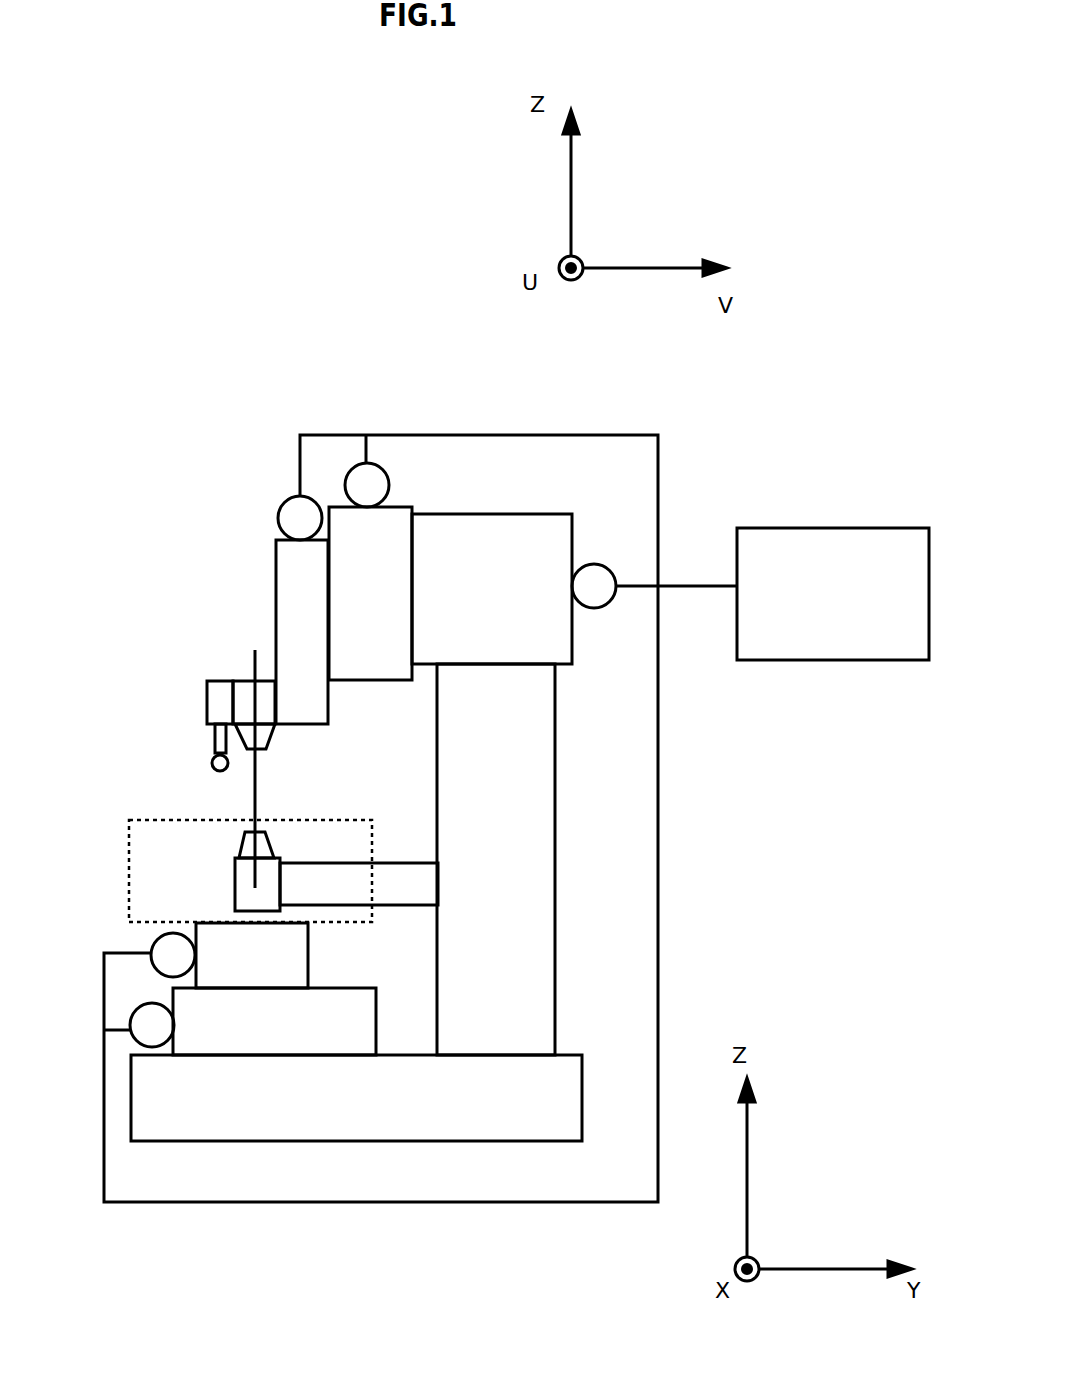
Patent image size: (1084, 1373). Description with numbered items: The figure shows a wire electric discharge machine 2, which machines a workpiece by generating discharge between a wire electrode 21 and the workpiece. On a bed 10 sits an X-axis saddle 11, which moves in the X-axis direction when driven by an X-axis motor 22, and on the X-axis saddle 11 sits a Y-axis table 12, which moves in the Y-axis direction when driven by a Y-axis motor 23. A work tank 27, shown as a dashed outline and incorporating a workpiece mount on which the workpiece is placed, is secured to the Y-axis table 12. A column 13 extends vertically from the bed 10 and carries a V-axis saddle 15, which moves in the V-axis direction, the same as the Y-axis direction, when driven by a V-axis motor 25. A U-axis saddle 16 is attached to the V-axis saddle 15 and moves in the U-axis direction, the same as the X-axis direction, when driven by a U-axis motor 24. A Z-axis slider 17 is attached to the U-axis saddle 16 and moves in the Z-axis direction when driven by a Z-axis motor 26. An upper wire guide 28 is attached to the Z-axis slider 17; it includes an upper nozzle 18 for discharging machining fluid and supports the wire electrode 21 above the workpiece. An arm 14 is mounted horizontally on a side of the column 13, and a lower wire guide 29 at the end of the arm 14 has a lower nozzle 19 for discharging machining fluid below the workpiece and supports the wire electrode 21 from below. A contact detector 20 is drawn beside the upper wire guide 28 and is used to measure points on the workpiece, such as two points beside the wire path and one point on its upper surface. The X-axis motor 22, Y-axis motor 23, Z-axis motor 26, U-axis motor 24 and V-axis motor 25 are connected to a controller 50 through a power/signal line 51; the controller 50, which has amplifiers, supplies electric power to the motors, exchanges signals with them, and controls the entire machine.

The wire electric discharge machine 2 is at (349, 375).
The bed 10 is at (347, 1142).
The X-axis saddle 11 is at (376, 1030).
The Y-axis table 12 is at (310, 972).
The column 13 is at (555, 826).
The arm 14 is at (395, 863).
The V-axis saddle 15 is at (497, 514).
The U-axis saddle 16 is at (377, 680).
The Z-axis slider 17 is at (276, 605).
The upper nozzle 18 is at (270, 734).
The lower nozzle 19 is at (268, 842).
The contact detector 20 is at (207, 698).
The wire electrode 21 is at (255, 805).
The X-axis motor 22 is at (130, 1010).
The Y-axis motor 23 is at (152, 945).
The U-axis motor 24 is at (390, 487).
The V-axis motor 25 is at (600, 565).
The Z-axis motor 26 is at (283, 504).
The work tank 27 is at (128, 822).
The upper wire guide 28 is at (245, 681).
The lower wire guide 29 is at (235, 885).
The controller 50 is at (828, 528).
The power/signal line 51 is at (658, 977).